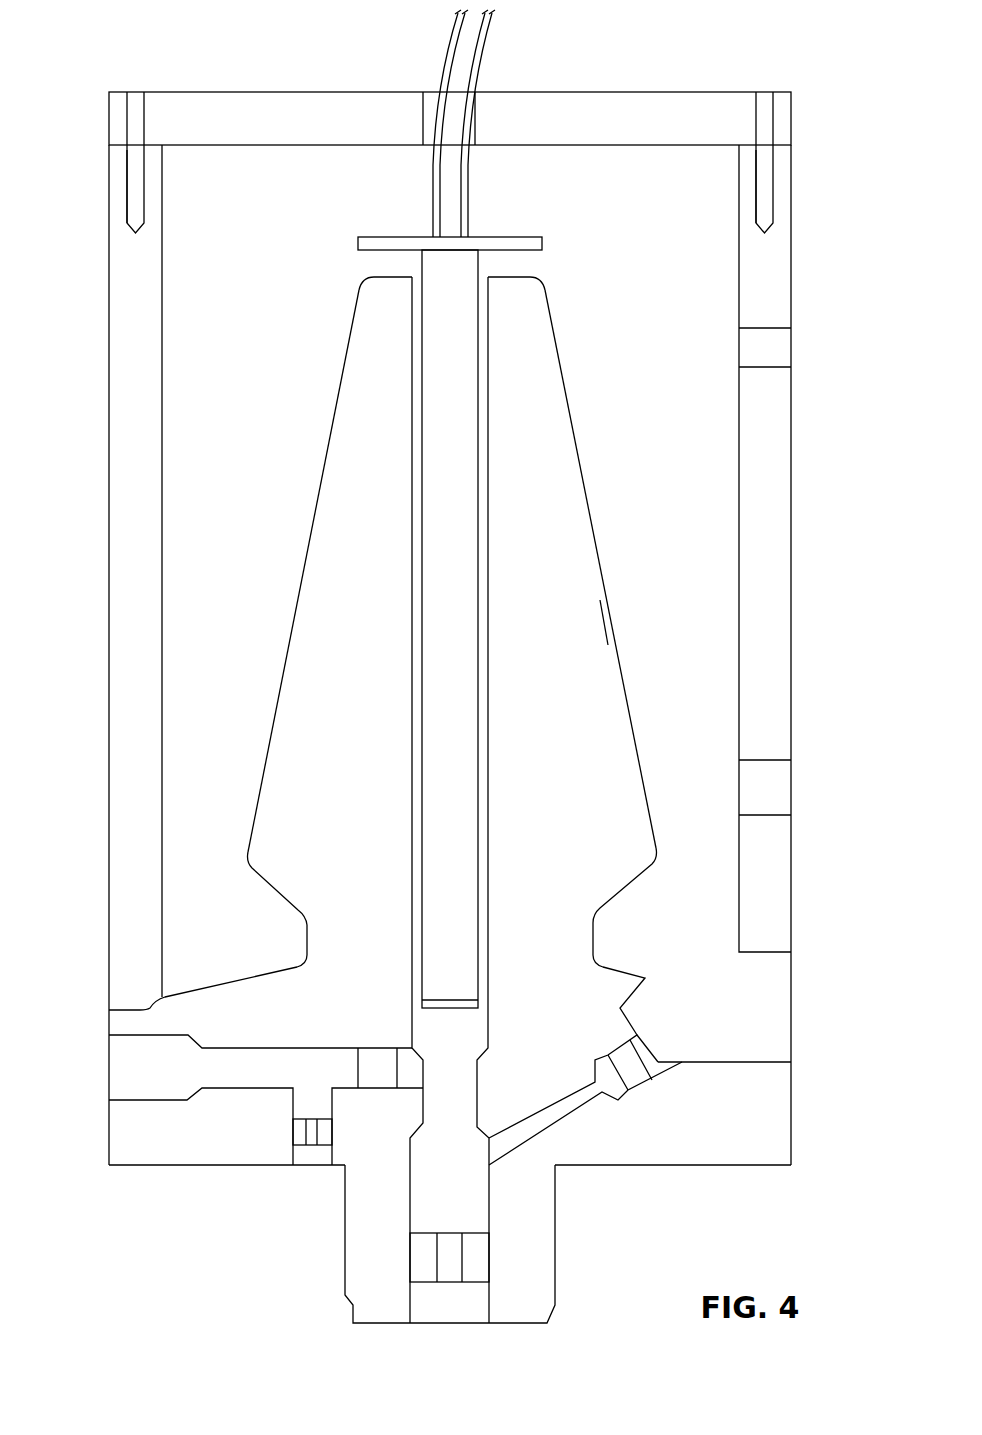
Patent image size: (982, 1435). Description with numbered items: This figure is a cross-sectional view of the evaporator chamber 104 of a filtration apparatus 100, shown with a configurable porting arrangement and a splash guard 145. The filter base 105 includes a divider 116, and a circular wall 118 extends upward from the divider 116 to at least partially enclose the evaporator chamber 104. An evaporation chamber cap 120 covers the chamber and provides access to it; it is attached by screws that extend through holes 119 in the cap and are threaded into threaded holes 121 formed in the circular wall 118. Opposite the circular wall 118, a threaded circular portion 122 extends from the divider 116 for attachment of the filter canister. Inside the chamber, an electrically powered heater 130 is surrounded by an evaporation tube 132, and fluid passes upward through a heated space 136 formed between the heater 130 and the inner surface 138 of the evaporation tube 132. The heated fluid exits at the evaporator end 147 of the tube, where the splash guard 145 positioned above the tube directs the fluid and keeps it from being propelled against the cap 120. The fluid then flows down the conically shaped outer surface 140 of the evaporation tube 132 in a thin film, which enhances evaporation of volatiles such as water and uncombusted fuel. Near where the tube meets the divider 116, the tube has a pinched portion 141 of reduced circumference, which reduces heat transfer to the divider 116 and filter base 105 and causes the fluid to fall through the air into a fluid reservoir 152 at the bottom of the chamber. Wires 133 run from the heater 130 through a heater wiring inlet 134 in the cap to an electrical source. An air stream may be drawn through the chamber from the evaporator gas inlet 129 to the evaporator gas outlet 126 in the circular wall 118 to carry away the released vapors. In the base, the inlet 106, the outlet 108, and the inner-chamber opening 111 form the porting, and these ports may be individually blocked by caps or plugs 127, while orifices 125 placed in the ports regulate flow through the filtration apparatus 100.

The filtration apparatus 100 is at (818, 64).
The evaporator chamber 104 is at (242, 511).
The filter base 105 is at (135, 700).
The inlet 106 is at (172, 1068).
The outlet 108 is at (792, 1038).
The inner-chamber opening 111 is at (555, 1100).
The divider 116 is at (752, 1115).
The circular wall 118 is at (135, 490).
The holes 119 is at (135, 107).
The evaporation chamber cap 120 is at (518, 100).
The threaded holes 121 is at (135, 188).
The threaded circular portion 122 is at (555, 1267).
The orifice 125 is at (313, 1140).
The evaporator gas outlet 126 is at (779, 348).
The caps or plugs 127 is at (378, 1062).
The evaporator gas inlet 129 is at (777, 787).
The heater 130 is at (458, 752).
The evaporation tube 132 is at (557, 510).
The wires 133 is at (468, 60).
The heater wiring inlet 134 is at (432, 100).
The heated space 136 is at (484, 961).
The inner surface 138 is at (490, 580).
The outer surface 140 is at (608, 645).
The pinched portion 141 is at (575, 942).
The splash guard 145 is at (378, 245).
The evaporator end 147 is at (417, 280).
The fluid reservoir 152 is at (208, 931).